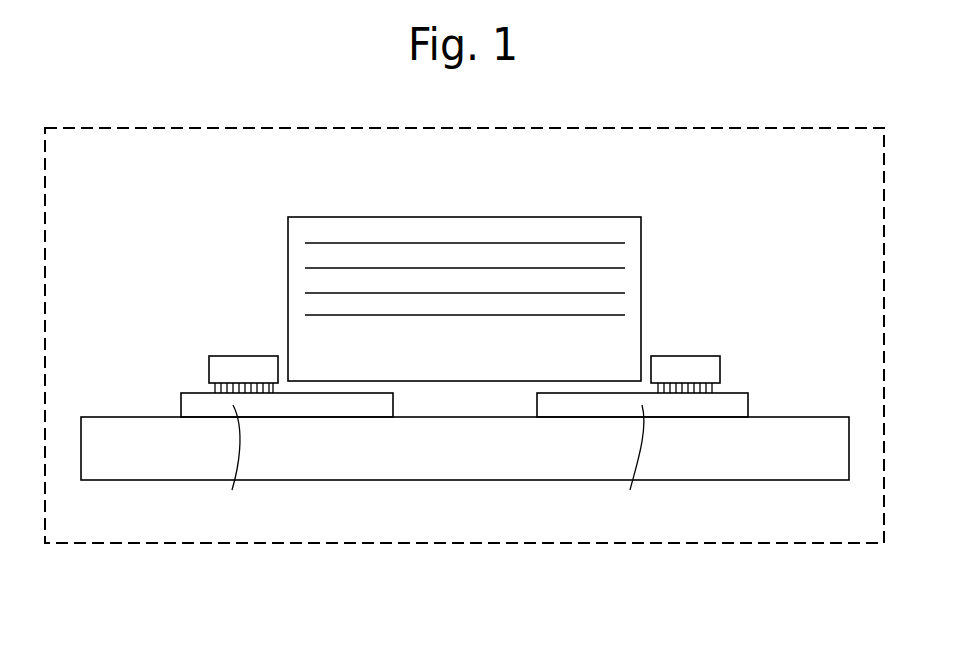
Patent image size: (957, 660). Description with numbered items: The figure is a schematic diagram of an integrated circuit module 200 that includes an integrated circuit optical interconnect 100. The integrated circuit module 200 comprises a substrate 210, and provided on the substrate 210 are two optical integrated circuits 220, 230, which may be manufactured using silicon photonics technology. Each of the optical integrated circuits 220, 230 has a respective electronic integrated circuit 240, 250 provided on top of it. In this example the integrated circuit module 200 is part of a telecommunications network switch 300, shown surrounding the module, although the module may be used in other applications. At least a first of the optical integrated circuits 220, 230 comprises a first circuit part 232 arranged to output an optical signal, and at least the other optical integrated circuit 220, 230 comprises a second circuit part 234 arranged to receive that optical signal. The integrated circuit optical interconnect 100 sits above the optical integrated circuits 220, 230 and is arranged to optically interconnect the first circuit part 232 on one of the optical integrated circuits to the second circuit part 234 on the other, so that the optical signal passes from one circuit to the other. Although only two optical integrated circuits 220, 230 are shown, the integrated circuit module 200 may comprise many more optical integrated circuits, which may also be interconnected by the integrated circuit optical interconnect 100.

The integrated circuit optical interconnect 100 is at (436, 202).
The integrated circuit module 200 is at (793, 240).
The substrate 210 is at (453, 480).
The optical integrated circuit 220 is at (320, 417).
The optical integrated circuit 230 is at (702, 417).
The first circuit part 232 is at (313, 393).
The second circuit part 234 is at (617, 393).
The electronic integrated circuit 240 is at (209, 362).
The electronic integrated circuit 250 is at (720, 365).
The telecommunications network switch 300 is at (719, 568).